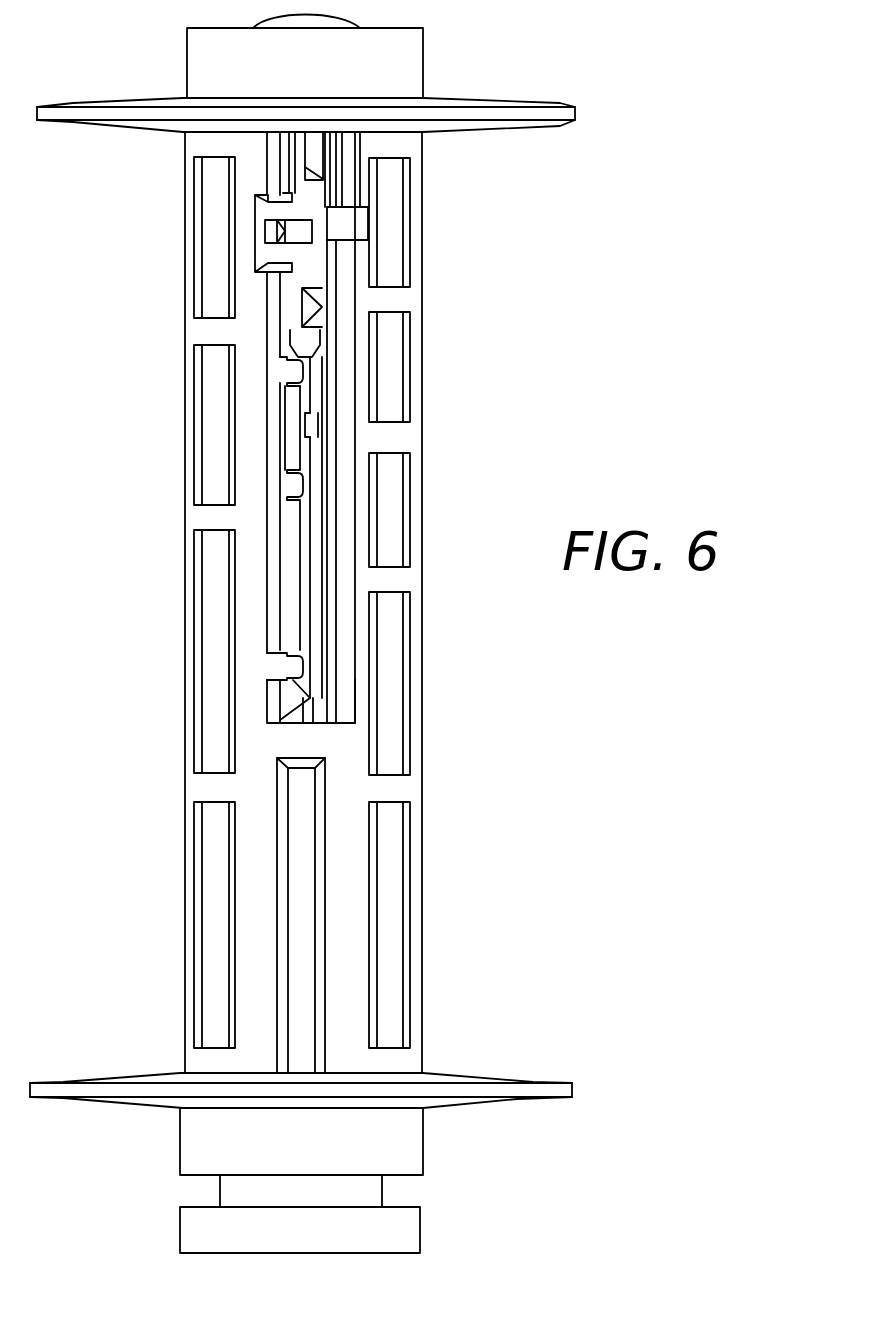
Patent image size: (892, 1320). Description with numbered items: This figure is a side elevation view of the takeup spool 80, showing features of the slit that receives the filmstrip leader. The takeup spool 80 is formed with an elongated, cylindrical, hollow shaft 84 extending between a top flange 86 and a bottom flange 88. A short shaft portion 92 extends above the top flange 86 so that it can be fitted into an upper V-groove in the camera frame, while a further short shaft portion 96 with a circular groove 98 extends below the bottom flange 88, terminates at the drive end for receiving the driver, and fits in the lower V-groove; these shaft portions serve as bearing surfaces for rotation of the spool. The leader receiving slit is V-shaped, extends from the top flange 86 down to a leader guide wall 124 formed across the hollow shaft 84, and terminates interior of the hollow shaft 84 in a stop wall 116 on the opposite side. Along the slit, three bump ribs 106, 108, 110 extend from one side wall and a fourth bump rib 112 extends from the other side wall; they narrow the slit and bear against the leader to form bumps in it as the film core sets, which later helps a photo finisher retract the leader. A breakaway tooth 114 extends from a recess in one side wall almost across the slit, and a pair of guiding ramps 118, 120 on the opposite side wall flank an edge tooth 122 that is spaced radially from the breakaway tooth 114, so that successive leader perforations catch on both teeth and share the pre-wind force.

The takeup spool 80 is at (172, 872).
The hollow shaft 84 is at (357, 790).
The top flange 86 is at (565, 118).
The bottom flange 88 is at (447, 1090).
The short shaft portion 92 is at (392, 1153).
The further short shaft portion 96 is at (402, 60).
The circular groove 98 is at (220, 1193).
The bump rib 106 is at (290, 372).
The bump rib 108 is at (290, 484).
The bump rib 110 is at (290, 666).
The fourth bump rib 112 is at (318, 425).
The breakaway tooth 114 is at (268, 233).
The stop wall 116 is at (303, 255).
The guiding ramp 118 is at (308, 145).
The guiding ramp 120 is at (303, 303).
The edge tooth 122 is at (353, 227).
The leader guide wall 124 is at (300, 713).